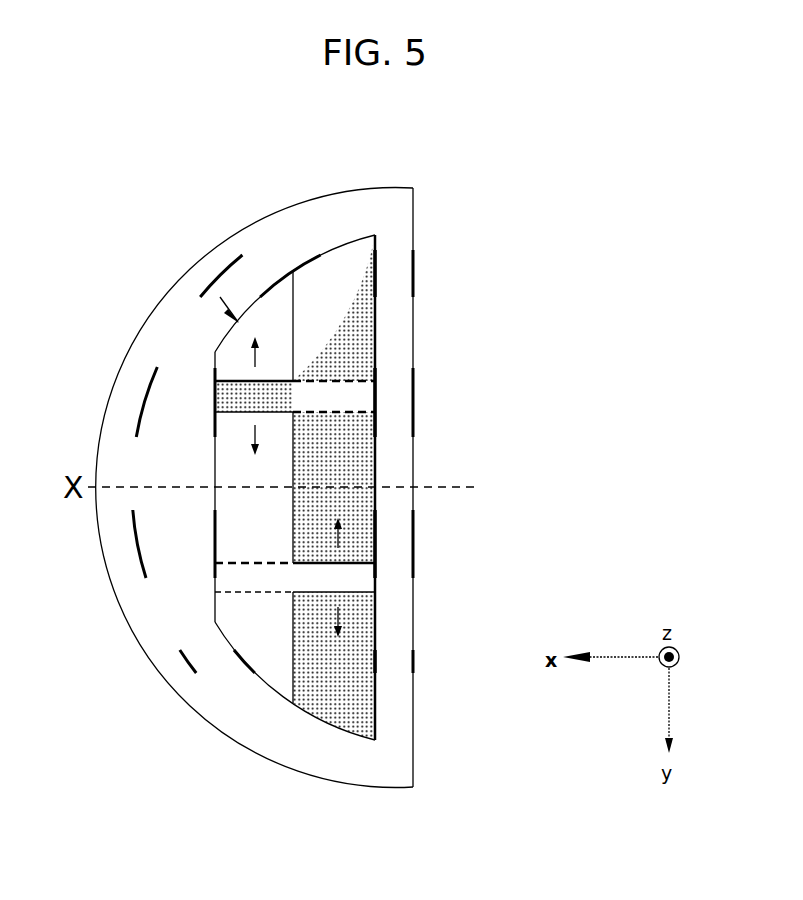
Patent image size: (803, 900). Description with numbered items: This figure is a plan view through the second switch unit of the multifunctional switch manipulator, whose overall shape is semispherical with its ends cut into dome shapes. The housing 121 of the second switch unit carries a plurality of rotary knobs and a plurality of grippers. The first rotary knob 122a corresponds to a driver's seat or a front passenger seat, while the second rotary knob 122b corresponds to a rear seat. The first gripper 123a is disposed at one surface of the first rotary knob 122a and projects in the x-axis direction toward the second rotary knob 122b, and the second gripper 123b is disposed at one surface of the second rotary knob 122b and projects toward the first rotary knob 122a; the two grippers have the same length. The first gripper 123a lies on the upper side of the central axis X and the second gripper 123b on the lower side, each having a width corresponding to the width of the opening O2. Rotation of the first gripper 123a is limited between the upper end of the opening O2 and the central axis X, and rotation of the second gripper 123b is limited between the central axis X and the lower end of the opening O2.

The housing 121 is at (140, 297).
The opening O2 is at (220, 297).
The first rotary knob 122a is at (362, 293).
The second rotary knob 122b is at (237, 650).
The first gripper 123a is at (375, 388).
The second gripper 123b is at (362, 581).